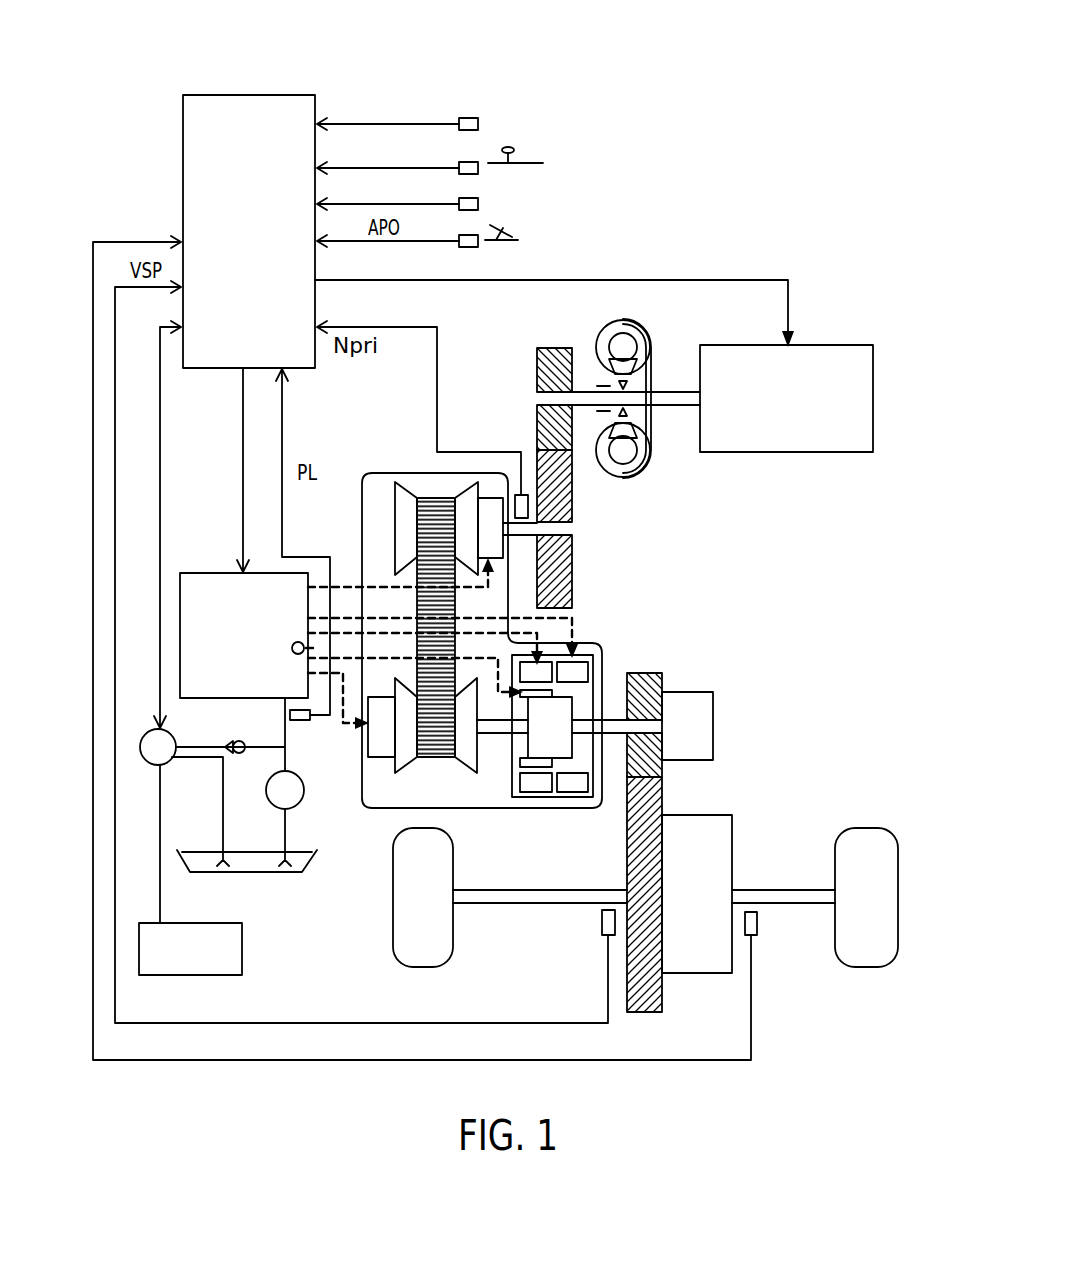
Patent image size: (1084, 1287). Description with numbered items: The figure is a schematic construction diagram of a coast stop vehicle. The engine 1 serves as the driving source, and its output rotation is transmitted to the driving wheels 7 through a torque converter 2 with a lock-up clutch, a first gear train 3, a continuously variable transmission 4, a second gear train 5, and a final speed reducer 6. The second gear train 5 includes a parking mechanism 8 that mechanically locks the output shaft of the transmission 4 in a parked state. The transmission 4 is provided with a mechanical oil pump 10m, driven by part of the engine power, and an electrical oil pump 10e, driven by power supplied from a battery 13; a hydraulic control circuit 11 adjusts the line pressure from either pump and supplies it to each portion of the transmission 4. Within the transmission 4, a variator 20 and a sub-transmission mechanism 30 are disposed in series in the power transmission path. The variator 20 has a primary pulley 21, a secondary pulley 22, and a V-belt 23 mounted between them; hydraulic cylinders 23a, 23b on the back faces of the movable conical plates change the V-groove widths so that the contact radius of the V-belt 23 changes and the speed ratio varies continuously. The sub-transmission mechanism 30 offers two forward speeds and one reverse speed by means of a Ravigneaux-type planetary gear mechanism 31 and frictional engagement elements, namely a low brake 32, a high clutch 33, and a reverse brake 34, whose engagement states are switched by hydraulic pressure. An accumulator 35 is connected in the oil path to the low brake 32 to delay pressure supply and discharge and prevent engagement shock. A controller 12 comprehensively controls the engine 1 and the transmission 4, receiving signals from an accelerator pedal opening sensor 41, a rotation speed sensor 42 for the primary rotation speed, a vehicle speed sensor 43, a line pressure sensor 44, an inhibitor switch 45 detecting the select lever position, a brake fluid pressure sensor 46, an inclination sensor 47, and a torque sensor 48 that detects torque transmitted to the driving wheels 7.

The engine 1 is at (860, 355).
The torque converter 2 is at (650, 347).
The first gear train 3 is at (564, 334).
The transmission 4 is at (405, 473).
The second gear train 5 is at (666, 1018).
The final speed reducer 6 is at (695, 965).
The driving wheels 7 is at (425, 955).
The parking mechanism 8 is at (700, 717).
The electrical oil pump 10e is at (166, 762).
The mechanical oil pump 10m is at (303, 796).
The hydraulic control circuit 11 is at (200, 578).
The controller 12 is at (302, 101).
The battery 13 is at (238, 962).
The variator 20 is at (374, 492).
The primary pulley 21 is at (410, 530).
The secondary pulley 22 is at (396, 765).
The V-belt 23 is at (437, 500).
The hydraulic cylinder 23a is at (490, 510).
The hydraulic cylinder 23b is at (377, 747).
The sub-transmission mechanism 30 is at (602, 660).
The Ravigneaux-type planetary gear mechanism 31 is at (553, 720).
The low brake 32 is at (538, 673).
The high clutch 33 is at (533, 763).
The reverse brake 34 is at (573, 673).
The accumulator 35 is at (294, 654).
The accelerator pedal opening sensor 41 is at (468, 247).
The rotation speed sensor 42 is at (522, 505).
The vehicle speed sensor 43 is at (602, 922).
The line pressure sensor 44 is at (312, 720).
The inhibitor switch 45 is at (469, 162).
The brake fluid pressure sensor 46 is at (468, 210).
The inclination sensor 47 is at (470, 118).
The torque sensor 48 is at (757, 935).